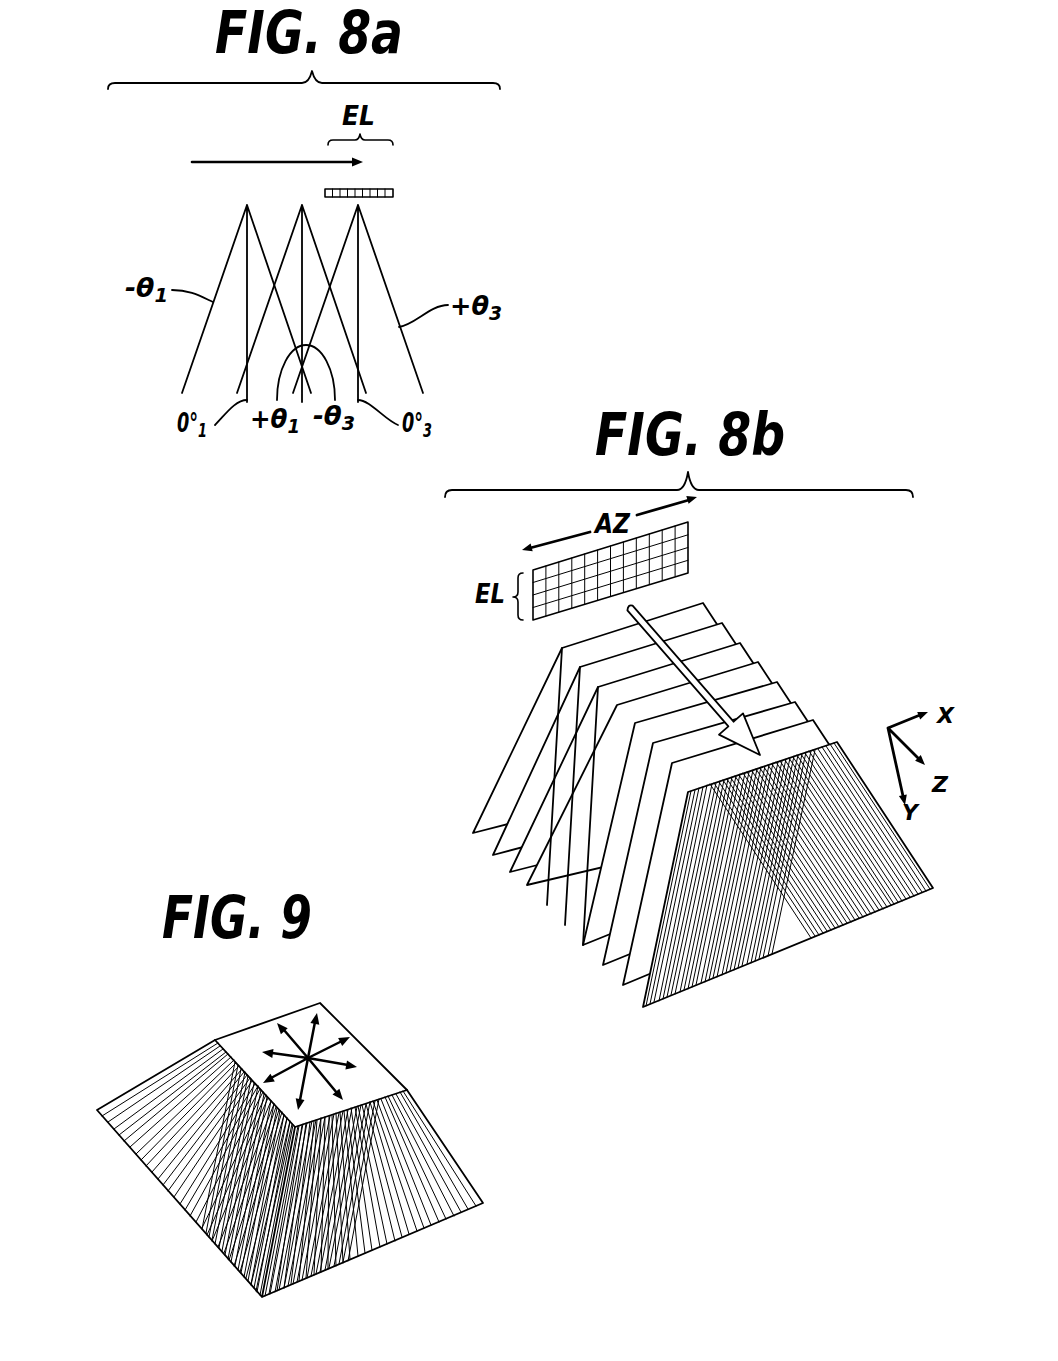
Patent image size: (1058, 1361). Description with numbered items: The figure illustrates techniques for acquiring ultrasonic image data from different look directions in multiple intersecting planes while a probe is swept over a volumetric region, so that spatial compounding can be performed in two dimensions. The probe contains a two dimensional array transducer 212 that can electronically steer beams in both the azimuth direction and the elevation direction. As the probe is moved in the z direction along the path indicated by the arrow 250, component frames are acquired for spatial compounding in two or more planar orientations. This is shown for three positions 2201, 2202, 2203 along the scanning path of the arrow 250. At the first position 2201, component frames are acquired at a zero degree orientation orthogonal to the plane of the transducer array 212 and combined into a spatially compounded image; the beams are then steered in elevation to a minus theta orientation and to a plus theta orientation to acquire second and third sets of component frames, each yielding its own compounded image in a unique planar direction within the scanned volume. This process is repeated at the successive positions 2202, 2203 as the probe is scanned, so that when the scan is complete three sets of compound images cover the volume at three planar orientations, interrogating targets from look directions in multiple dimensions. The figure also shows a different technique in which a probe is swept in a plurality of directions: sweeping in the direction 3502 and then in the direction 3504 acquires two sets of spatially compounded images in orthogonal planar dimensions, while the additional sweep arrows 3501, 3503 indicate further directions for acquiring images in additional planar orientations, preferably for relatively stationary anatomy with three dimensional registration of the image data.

In FIG. 8a, the two dimensional array transducer 212 is at (393, 193).
In FIG. 8b, the two dimensional array transducer 212 is at (690, 562).
In FIG. 8a, the arrow 250 is at (253, 162).
In FIG. 8b, the arrow 250 is at (643, 618).
In FIG. 8a, the first position 2201 is at (247, 205).
In FIG. 8a, the second position 2202 is at (302, 205).
In FIG. 8a, the third position 2203 is at (358, 205).
In FIG. 9, the sweep direction 3501 is at (322, 1012).
In FIG. 9, the sweep direction 3502 is at (352, 1040).
In FIG. 9, the sweep direction 3503 is at (357, 1068).
In FIG. 9, the sweep direction 3504 is at (280, 1025).